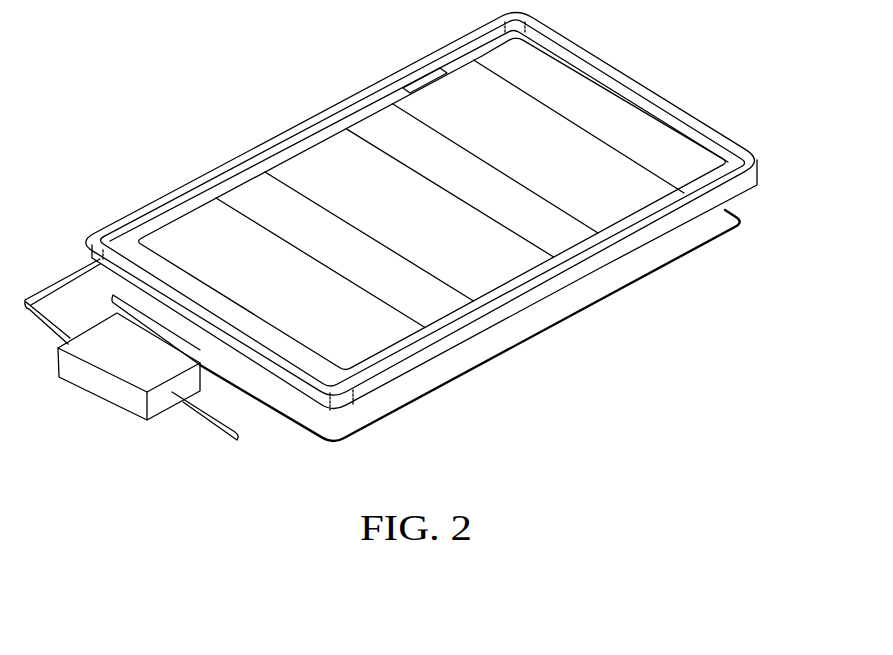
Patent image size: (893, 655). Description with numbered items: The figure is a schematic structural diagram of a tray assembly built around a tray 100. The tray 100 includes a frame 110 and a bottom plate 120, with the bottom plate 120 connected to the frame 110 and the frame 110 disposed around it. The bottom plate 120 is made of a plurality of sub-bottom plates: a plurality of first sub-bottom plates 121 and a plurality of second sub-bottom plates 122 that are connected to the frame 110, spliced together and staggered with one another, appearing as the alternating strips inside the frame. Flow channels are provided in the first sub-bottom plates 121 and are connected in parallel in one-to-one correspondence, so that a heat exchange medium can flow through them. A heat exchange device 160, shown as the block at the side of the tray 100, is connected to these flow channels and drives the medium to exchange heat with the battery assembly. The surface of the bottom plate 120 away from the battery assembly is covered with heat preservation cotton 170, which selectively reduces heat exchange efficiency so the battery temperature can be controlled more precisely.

The tray 100 is at (167, 44).
The frame 110 is at (303, 119).
The bottom plate 120 is at (218, 93).
The first sub-bottom plate 121 is at (260, 263).
The second sub-bottom plate 122 is at (315, 235).
The heat exchange device 160 is at (126, 375).
The heat preservation cotton 170 is at (390, 411).